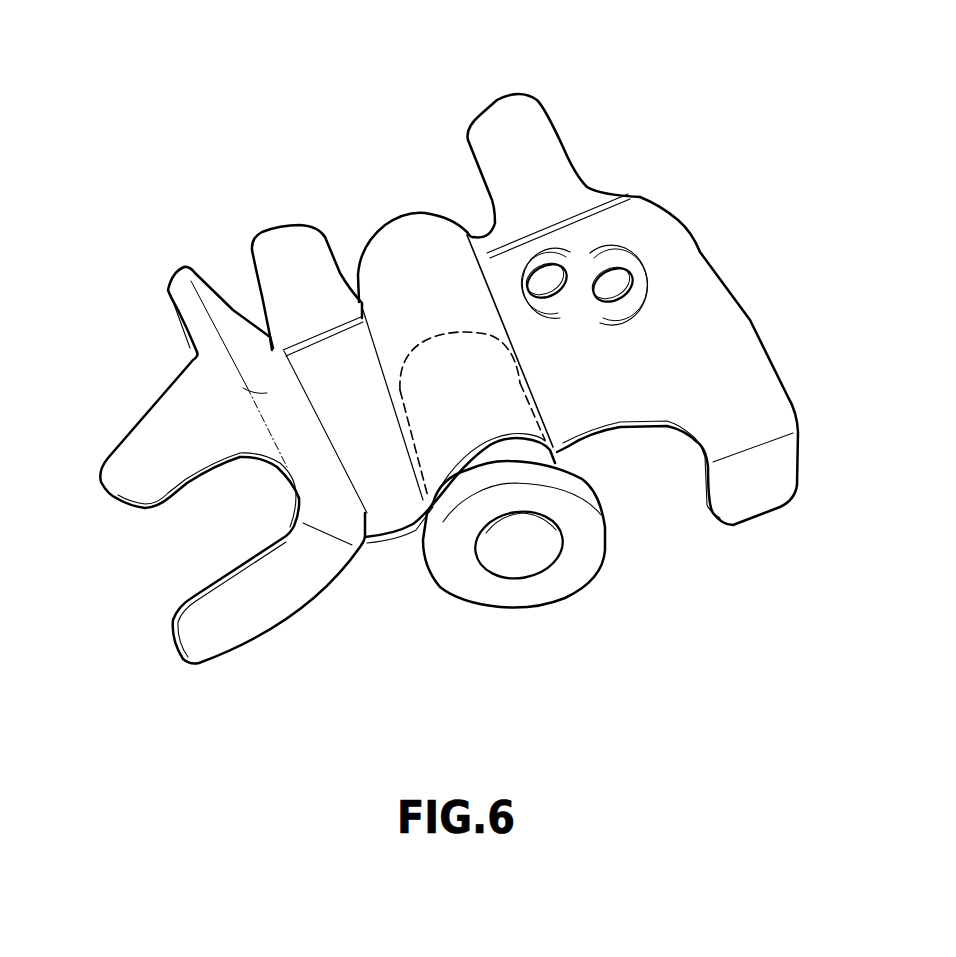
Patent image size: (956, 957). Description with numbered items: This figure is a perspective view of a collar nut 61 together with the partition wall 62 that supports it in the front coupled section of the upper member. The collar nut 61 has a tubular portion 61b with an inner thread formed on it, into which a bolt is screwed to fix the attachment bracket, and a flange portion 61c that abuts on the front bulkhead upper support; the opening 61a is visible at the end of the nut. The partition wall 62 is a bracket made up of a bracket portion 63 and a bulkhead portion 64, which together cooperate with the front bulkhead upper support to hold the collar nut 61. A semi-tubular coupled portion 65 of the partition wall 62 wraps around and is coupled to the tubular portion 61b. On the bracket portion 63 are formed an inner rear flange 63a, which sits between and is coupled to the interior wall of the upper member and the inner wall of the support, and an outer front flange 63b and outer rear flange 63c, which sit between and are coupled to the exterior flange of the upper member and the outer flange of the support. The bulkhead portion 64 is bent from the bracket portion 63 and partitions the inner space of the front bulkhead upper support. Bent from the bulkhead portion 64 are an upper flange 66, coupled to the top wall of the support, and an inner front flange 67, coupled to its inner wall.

The collar nut 61 is at (138, 111).
The hole 61a is at (505, 533).
The tubular portion 61b is at (446, 488).
The flange portion 61c is at (575, 557).
The partition wall 62 is at (683, 239).
The bracket portion 63 is at (648, 210).
The inner rear flange 63a is at (753, 488).
The outer front flange 63b is at (278, 245).
The outer rear flange 63c is at (498, 122).
The bulkhead portion 64 is at (190, 365).
The semi-tubular coupled portion 65 is at (390, 243).
The upper flange 66 is at (165, 440).
The inner front flange 67 is at (247, 617).